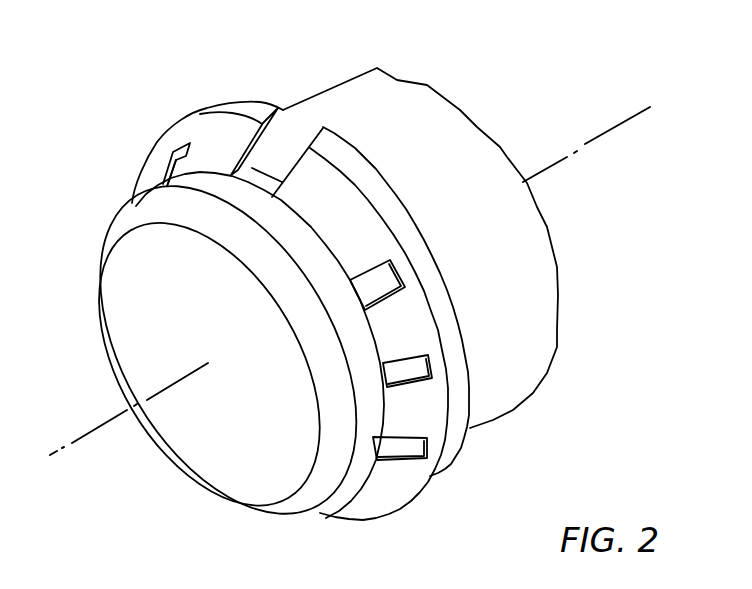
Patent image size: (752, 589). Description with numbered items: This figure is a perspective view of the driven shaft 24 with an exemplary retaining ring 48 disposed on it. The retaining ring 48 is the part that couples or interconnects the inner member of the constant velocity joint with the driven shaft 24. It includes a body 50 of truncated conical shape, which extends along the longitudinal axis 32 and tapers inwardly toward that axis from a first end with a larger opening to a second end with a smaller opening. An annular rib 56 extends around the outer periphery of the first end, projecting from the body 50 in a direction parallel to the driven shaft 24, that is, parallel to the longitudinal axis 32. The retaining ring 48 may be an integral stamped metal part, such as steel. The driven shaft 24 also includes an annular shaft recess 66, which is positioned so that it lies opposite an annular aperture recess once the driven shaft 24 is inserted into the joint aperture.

The driven shaft 24 is at (380, 113).
The longitudinal axis 32 is at (567, 158).
The retaining ring 48 is at (147, 158).
The body 50 is at (373, 497).
The annular rib 56 is at (453, 450).
The annular shaft recess 66 is at (250, 190).